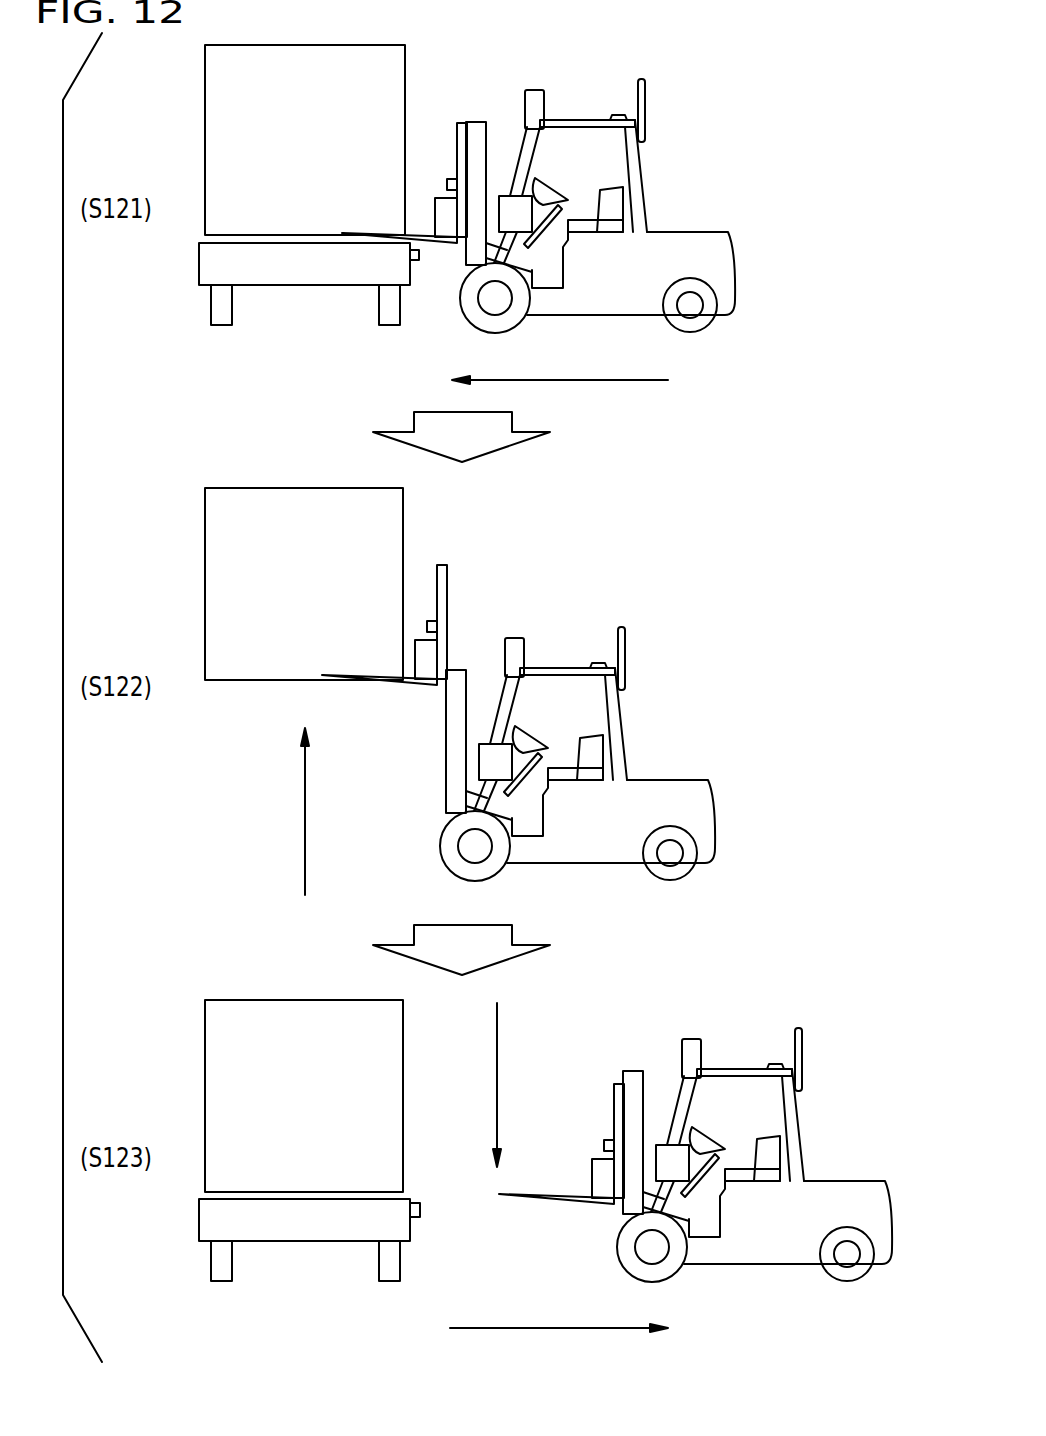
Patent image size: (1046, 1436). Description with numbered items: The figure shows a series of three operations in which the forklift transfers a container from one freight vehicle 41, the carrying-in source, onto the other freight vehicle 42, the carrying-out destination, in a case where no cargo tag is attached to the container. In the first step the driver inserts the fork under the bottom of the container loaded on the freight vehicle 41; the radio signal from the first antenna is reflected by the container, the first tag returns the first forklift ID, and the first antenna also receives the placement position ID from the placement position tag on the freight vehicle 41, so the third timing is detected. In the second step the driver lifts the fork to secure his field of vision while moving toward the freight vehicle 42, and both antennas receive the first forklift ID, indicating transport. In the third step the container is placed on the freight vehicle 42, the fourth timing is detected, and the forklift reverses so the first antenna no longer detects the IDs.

The freight vehicle 41 is at (302, 287).
The freight vehicle 42 is at (305, 1240).